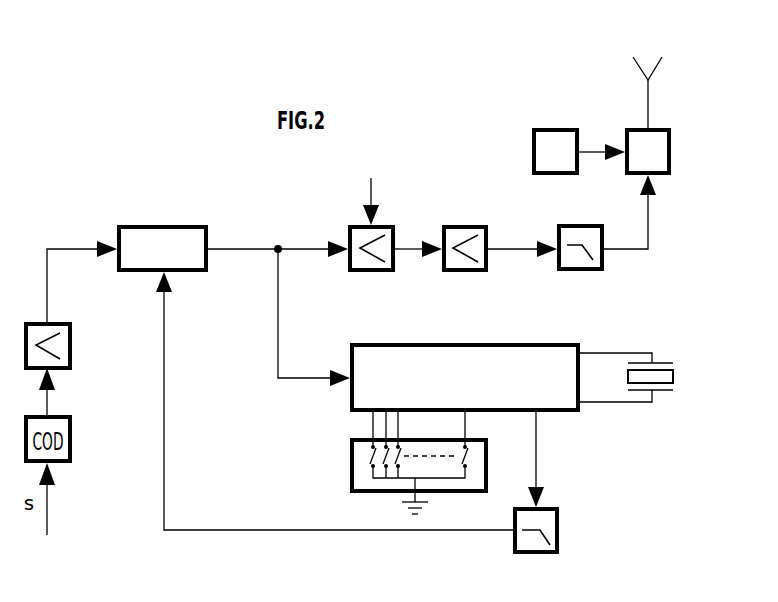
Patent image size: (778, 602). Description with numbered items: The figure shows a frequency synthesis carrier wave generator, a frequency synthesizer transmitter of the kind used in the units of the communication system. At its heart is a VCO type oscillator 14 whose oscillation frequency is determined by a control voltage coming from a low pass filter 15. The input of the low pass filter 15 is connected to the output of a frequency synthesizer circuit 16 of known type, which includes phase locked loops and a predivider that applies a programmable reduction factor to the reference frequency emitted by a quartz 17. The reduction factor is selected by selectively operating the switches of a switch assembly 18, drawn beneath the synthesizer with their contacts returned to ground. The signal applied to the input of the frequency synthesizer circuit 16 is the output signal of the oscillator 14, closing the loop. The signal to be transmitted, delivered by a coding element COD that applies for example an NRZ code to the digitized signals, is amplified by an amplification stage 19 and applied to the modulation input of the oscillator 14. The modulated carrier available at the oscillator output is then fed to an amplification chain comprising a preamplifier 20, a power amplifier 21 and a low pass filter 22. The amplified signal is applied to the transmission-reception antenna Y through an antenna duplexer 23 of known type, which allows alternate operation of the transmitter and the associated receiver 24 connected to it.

The VCO type oscillator 14 is at (117, 263).
The low pass filter 15 is at (557, 515).
The frequency synthesizer circuit 16 is at (420, 343).
The quartz 17 is at (673, 372).
The switch assembly 18 is at (350, 470).
The amplification stage 19 is at (70, 333).
The preamplifier 20 is at (367, 273).
The power amplifier 21 is at (458, 273).
The low pass filter 22 is at (568, 271).
The antenna duplexer 23 is at (625, 138).
The receiver 24 is at (545, 128).